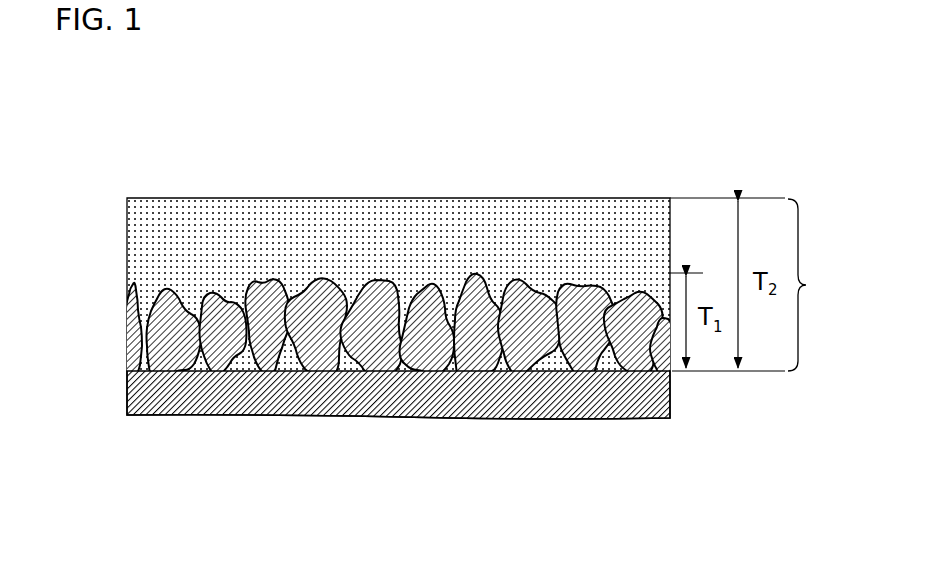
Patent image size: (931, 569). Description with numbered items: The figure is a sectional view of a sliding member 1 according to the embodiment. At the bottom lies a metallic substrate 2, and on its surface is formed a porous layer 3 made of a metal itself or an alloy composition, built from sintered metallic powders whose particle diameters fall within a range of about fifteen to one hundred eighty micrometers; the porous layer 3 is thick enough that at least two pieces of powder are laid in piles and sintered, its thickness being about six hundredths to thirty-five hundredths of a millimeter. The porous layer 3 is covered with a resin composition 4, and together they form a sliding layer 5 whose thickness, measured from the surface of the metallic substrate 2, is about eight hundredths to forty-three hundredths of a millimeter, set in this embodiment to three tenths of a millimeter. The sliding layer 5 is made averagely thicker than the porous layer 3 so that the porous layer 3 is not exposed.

The sliding member 1 is at (189, 174).
The metallic substrate 2 is at (128, 389).
The porous layer 3 is at (121, 330).
The resin composition 4 is at (140, 222).
The sliding layer 5 is at (806, 285).